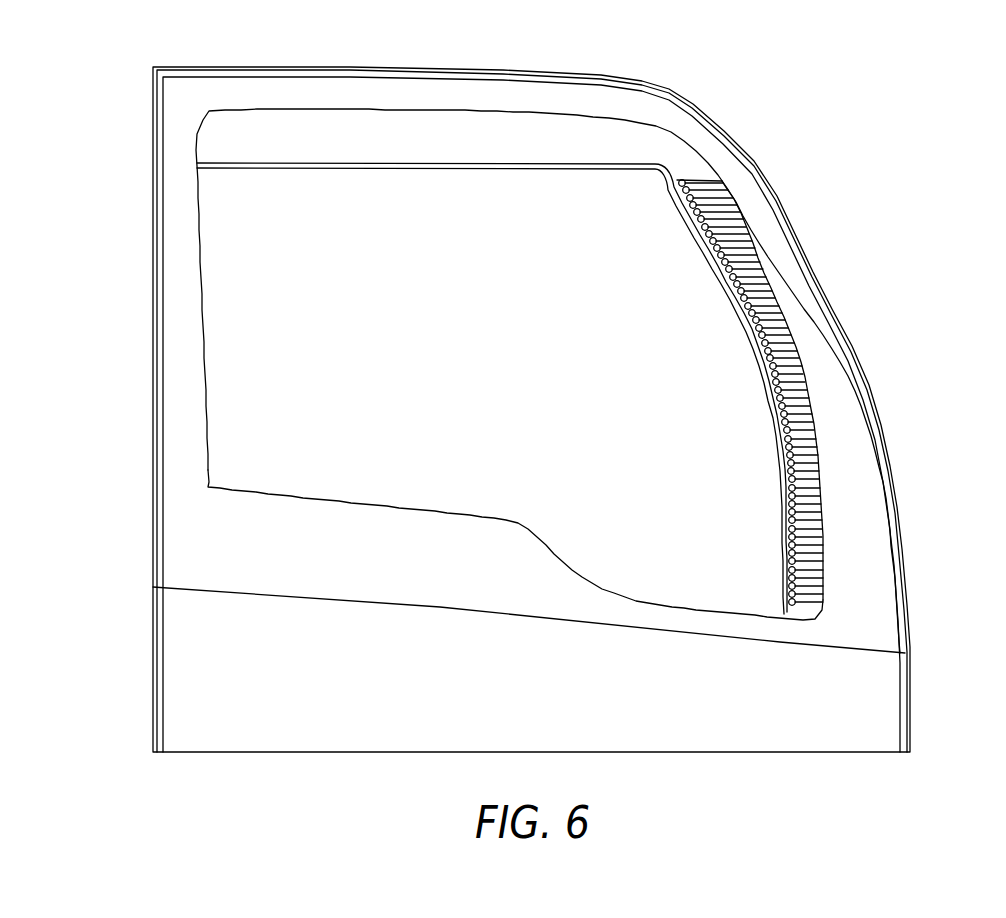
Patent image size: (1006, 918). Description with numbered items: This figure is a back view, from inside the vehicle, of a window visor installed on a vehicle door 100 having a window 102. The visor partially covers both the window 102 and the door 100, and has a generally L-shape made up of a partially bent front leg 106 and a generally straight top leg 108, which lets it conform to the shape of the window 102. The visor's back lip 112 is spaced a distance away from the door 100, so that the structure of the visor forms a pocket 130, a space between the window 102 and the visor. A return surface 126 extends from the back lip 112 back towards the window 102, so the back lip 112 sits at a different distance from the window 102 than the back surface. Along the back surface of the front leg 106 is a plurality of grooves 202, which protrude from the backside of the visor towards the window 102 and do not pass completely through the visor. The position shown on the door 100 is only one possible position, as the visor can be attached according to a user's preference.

The vehicle door 100 is at (880, 543).
The window 102 is at (227, 367).
The front leg 106 is at (767, 320).
The top leg 108 is at (353, 127).
The back lip 112 is at (328, 162).
The return surface 126 is at (675, 187).
The pocket 130 is at (528, 141).
The grooves 202 is at (792, 517).